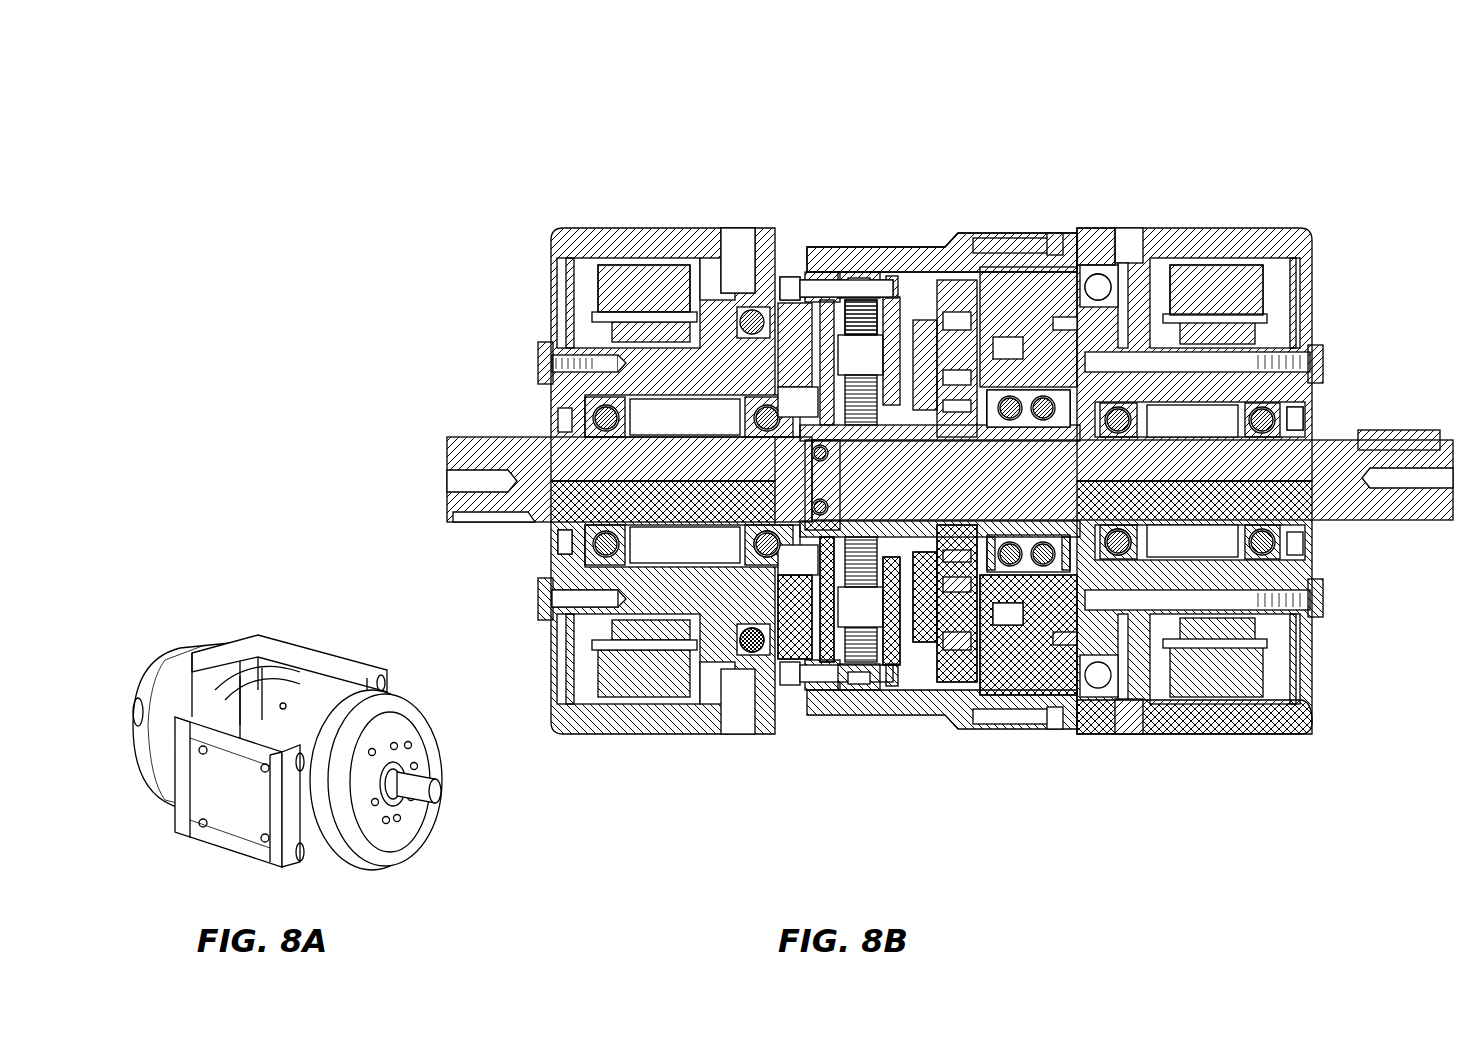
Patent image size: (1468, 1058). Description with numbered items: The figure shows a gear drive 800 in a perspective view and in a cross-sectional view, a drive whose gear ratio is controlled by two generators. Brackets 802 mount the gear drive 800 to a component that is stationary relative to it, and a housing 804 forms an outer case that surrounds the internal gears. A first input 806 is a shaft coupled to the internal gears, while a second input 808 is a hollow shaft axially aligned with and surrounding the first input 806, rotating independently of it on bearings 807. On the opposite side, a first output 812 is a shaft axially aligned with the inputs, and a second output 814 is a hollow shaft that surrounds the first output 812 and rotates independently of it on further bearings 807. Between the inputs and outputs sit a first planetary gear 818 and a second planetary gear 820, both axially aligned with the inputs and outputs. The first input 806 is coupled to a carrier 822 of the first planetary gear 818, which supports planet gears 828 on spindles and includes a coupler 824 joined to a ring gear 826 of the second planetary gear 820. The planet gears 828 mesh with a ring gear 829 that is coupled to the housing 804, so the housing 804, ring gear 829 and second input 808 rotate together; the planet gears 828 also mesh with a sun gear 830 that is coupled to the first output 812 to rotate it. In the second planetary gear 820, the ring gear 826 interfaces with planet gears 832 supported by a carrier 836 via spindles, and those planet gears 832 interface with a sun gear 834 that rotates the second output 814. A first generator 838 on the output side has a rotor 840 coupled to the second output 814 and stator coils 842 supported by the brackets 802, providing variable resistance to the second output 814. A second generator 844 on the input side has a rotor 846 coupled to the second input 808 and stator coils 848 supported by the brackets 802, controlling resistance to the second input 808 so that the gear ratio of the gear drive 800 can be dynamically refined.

In FIG. 8B, the gear drive 800 is at (552, 127).
In FIG. 8A, the gear drive 800 is at (175, 607).
In FIG. 8B, the brackets 802 is at (762, 230).
In FIG. 8A, the brackets 802 is at (365, 672).
In FIG. 8B, the housing 804 is at (923, 253).
In FIG. 8A, the housing 804 is at (258, 690).
In FIG. 8B, the first input 806 is at (495, 458).
In FIG. 8A, the first input 806 is at (136, 726).
In FIG. 8B, the bearings 807 is at (1292, 422).
In FIG. 8B, the second input 808 is at (630, 598).
In FIG. 8B, the first output 812 is at (1350, 525).
In FIG. 8A, the first output 812 is at (425, 796).
In FIG. 8B, the second output 814 is at (1110, 387).
In FIG. 8B, the first planetary gear 818 is at (850, 600).
In FIG. 8B, the second planetary gear 820 is at (963, 610).
In FIG. 8B, the carrier 822 is at (798, 267).
In FIG. 8B, the coupler 824 is at (912, 262).
In FIG. 8B, the ring gear 826 is at (973, 267).
In FIG. 8B, the planet gears 828 is at (890, 640).
In FIG. 8B, the ring gear 829 is at (855, 280).
In FIG. 8B, the sun gear 830 is at (817, 670).
In FIG. 8B, the planet gears 832 is at (990, 650).
In FIG. 8B, the sun gear 834 is at (1125, 280).
In FIG. 8B, the carrier 836 is at (1040, 640).
In FIG. 8B, the first generator 838 is at (1335, 775).
In FIG. 8A, the first generator 838 is at (380, 850).
In FIG. 8B, the rotor 840 is at (1310, 705).
In FIG. 8B, the stator coils 842 is at (1225, 290).
In FIG. 8B, the second generator 844 is at (520, 325).
In FIG. 8A, the second generator 844 is at (180, 668).
In FIG. 8B, the rotor 846 is at (560, 705).
In FIG. 8B, the stator coils 848 is at (632, 283).